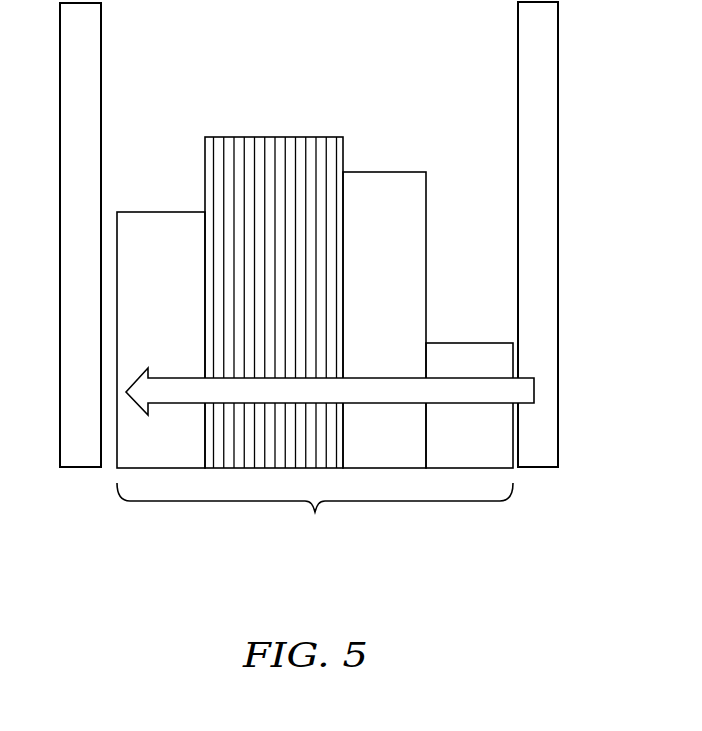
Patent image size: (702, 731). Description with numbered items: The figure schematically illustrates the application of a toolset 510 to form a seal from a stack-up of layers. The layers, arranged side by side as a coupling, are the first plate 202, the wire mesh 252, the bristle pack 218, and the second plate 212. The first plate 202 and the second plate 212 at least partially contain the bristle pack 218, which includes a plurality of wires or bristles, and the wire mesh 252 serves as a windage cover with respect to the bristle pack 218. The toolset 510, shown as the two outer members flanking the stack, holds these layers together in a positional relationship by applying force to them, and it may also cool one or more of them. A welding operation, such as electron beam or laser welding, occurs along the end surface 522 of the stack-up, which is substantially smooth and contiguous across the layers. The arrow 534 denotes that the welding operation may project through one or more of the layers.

The toolset 510 is at (73, 470).
The second plate 212 is at (155, 212).
The bristle pack 218 is at (258, 137).
The wire mesh 252 is at (375, 172).
The first plate 202 is at (473, 343).
The arrow 534 is at (378, 378).
The end/surface of the stack-up 522 is at (315, 515).